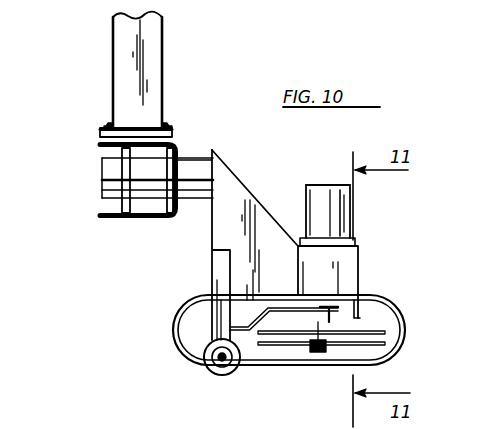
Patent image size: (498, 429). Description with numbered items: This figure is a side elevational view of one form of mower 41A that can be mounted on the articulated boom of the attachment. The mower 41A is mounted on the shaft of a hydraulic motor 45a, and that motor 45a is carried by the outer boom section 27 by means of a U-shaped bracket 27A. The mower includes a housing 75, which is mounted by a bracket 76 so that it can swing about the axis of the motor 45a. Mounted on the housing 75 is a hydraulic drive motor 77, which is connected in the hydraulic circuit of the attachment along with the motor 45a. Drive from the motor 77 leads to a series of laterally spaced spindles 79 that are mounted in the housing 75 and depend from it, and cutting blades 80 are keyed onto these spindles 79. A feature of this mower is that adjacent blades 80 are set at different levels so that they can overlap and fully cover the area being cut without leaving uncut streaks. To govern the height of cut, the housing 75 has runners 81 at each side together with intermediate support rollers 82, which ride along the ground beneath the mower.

The outer boom section 27 is at (150, 57).
The U-shaped bracket 27A is at (148, 222).
The hydraulic motor 45a is at (108, 172).
The bracket 76 is at (256, 212).
The hydraulic drive motor 77 is at (330, 212).
The mower 41A is at (358, 265).
The housing 75 is at (345, 282).
The spindles 79 is at (324, 316).
The blades 80 is at (276, 335).
The runners 81 is at (173, 325).
The support rollers 82 is at (213, 376).